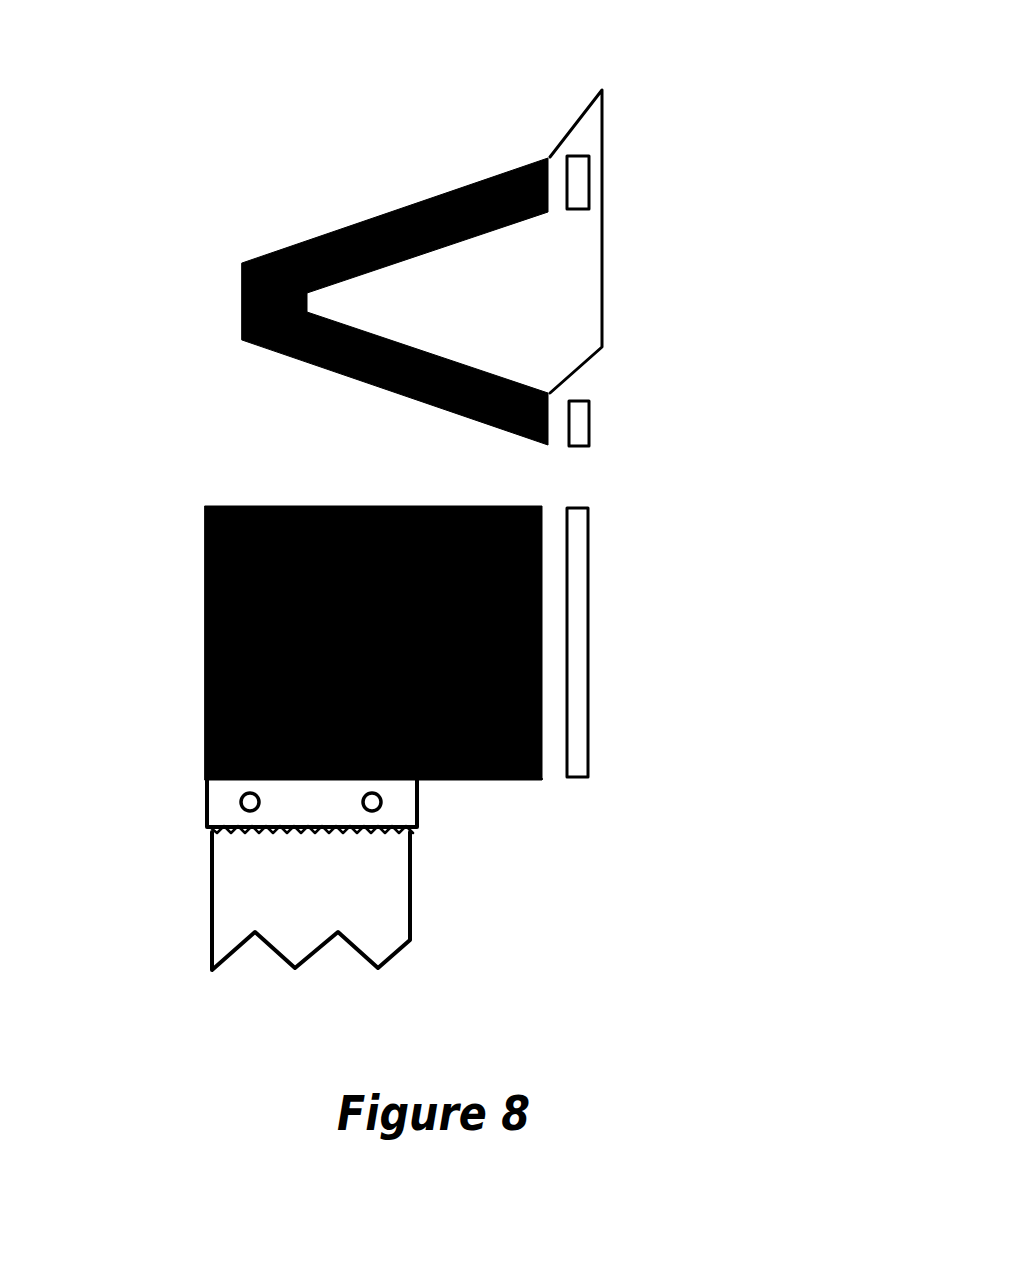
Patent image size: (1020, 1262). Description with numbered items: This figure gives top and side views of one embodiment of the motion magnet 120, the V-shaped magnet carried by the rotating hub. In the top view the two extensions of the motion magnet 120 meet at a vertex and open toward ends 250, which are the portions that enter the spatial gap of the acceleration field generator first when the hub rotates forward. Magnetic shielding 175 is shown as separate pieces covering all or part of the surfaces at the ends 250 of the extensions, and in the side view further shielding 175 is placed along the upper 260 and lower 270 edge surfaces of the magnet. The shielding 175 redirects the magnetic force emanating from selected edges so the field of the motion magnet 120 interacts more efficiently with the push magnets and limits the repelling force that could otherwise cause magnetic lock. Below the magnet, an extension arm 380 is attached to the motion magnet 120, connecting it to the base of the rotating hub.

The motion magnet 120 is at (270, 252).
The ends 250 is at (640, 197).
The magnetic shielding 175 is at (726, 466).
The upper edge surface 260 is at (297, 590).
The lower edge surface 270 is at (571, 829).
The extension arm 380 is at (243, 895).